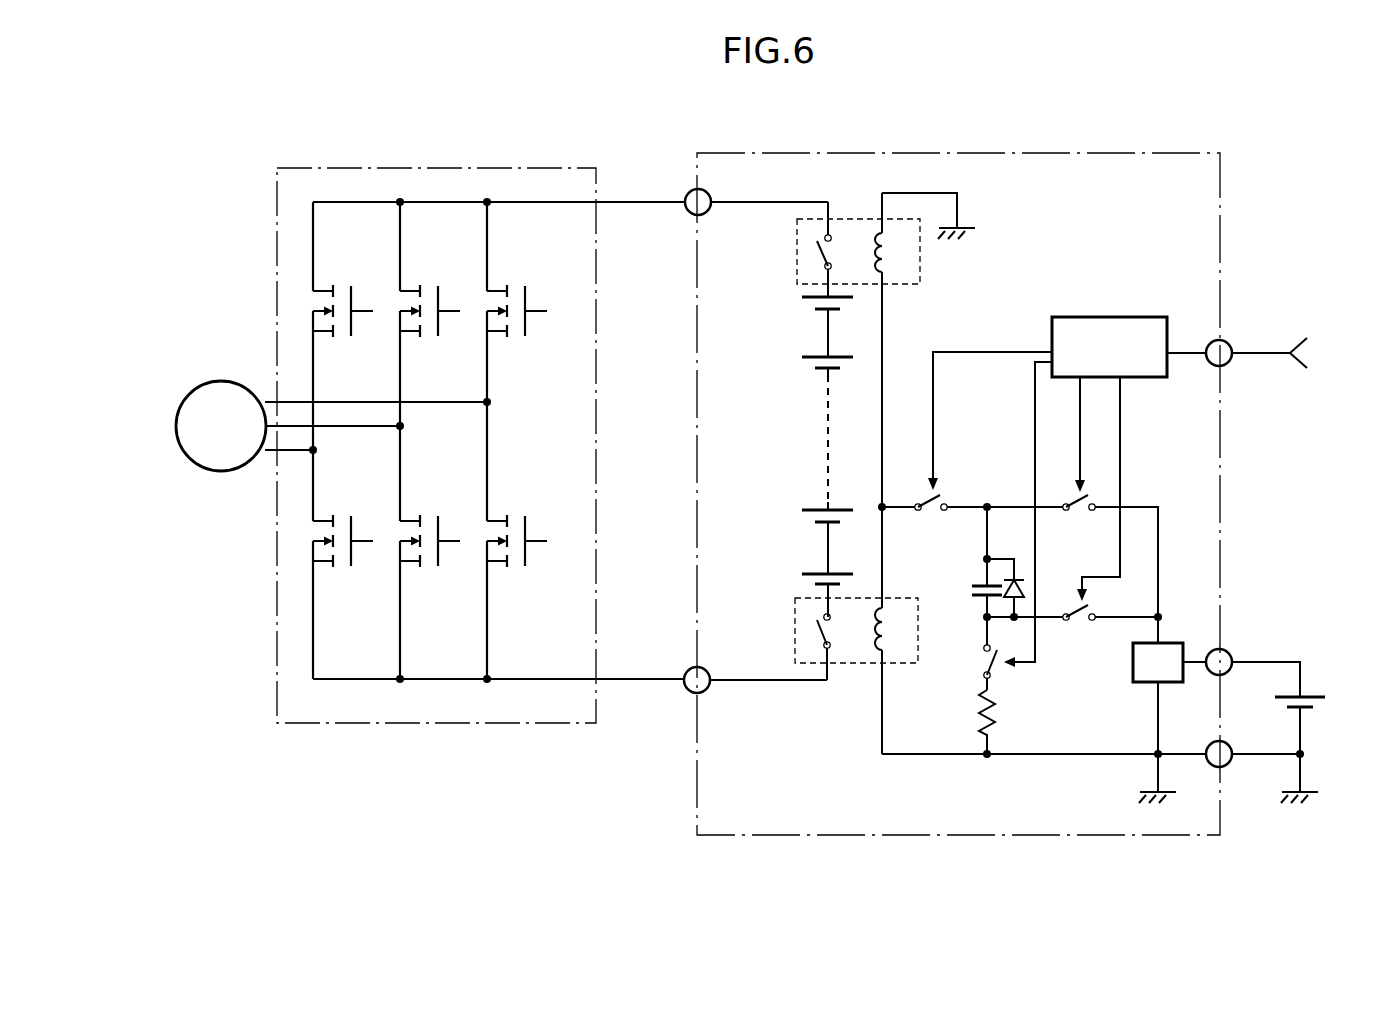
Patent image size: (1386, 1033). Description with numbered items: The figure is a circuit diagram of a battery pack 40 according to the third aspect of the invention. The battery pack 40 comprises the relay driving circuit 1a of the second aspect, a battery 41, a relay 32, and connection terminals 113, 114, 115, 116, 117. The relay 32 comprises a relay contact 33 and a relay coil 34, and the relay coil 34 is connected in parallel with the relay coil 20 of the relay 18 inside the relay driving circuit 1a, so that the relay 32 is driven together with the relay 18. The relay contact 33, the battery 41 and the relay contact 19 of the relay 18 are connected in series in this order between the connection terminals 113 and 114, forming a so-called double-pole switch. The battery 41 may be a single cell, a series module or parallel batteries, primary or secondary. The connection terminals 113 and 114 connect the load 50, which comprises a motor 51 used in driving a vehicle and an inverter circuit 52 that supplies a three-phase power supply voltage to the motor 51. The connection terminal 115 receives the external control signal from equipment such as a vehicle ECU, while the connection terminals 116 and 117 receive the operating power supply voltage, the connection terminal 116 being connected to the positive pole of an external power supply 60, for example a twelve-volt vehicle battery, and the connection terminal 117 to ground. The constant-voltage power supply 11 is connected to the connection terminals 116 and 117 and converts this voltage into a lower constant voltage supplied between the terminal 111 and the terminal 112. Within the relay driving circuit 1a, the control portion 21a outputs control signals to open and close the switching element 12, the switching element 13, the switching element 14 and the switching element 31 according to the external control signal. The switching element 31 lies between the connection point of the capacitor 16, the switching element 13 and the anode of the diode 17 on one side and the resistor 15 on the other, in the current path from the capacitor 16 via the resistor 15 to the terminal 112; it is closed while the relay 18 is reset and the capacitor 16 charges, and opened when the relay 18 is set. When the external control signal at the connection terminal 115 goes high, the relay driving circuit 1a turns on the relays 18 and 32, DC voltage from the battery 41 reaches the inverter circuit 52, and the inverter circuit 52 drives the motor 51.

The load 50 is at (232, 128).
The motor 51 is at (220, 380).
The inverter circuit 52 is at (447, 168).
The battery pack 40 is at (1072, 153).
The battery 41 is at (780, 388).
The connection terminal 113 is at (690, 195).
The connection terminal 114 is at (690, 694).
The connection terminal 115 is at (1230, 342).
The connection terminal 116 is at (1225, 648).
The connection terminal 117 is at (1222, 768).
The relay 32 is at (852, 219).
The relay contact 33 is at (810, 254).
The relay coil 34 is at (897, 253).
The relay 18 is at (853, 665).
The relay contact 19 is at (812, 630).
The relay coil 20 is at (888, 630).
The relay driving circuit 1a is at (1072, 258).
The control portion 21a is at (1105, 317).
The switching element 14 is at (970, 518).
The switching element 12 is at (1110, 556).
The switching element 13 is at (1072, 628).
The capacitor 16 is at (972, 582).
The diode 17 is at (1022, 582).
The terminal 111 is at (1160, 615).
The terminal 112 is at (1160, 751).
The constant-voltage power supply 11 is at (1138, 685).
The switching element 31 is at (983, 662).
The resistor 15 is at (978, 717).
The external power supply 60 is at (1322, 707).